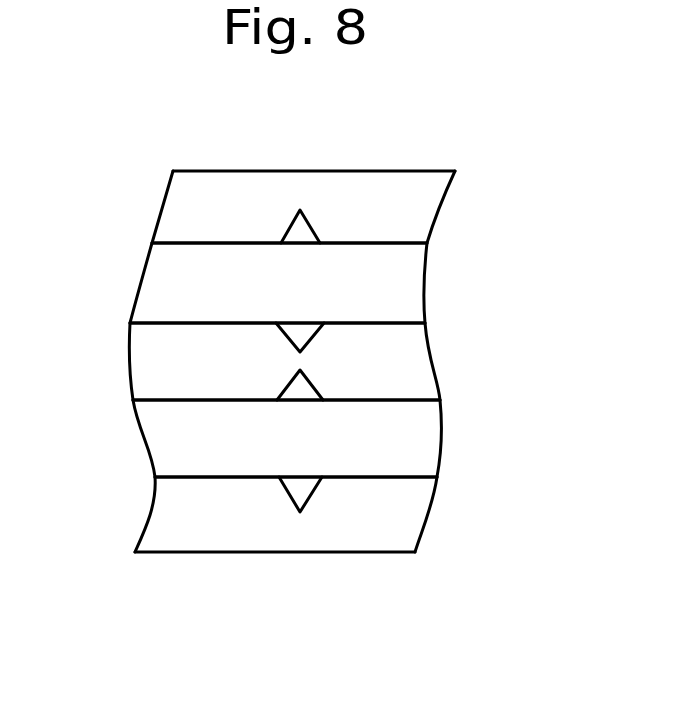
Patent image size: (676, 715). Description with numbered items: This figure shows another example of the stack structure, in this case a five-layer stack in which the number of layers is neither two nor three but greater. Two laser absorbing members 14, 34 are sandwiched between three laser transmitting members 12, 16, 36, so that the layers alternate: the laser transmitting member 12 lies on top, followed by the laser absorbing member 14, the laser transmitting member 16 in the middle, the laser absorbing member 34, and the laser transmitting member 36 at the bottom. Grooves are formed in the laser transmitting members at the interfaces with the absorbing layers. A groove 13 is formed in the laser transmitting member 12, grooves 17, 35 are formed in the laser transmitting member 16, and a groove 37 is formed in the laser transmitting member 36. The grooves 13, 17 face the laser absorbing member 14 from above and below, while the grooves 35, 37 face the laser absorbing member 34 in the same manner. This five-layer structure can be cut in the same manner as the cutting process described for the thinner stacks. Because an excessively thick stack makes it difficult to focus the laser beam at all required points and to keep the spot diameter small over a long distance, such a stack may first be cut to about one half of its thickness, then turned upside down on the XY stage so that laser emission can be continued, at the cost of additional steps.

The laser transmitting member 12 is at (425, 210).
The groove 13 is at (302, 230).
The laser absorbing member 14 is at (423, 283).
The laser transmitting member 16 is at (418, 367).
The groove 17 is at (293, 335).
The laser absorbing member 34 is at (423, 442).
The groove 35 is at (297, 391).
The laser transmitting member 36 is at (408, 518).
The groove 37 is at (293, 490).